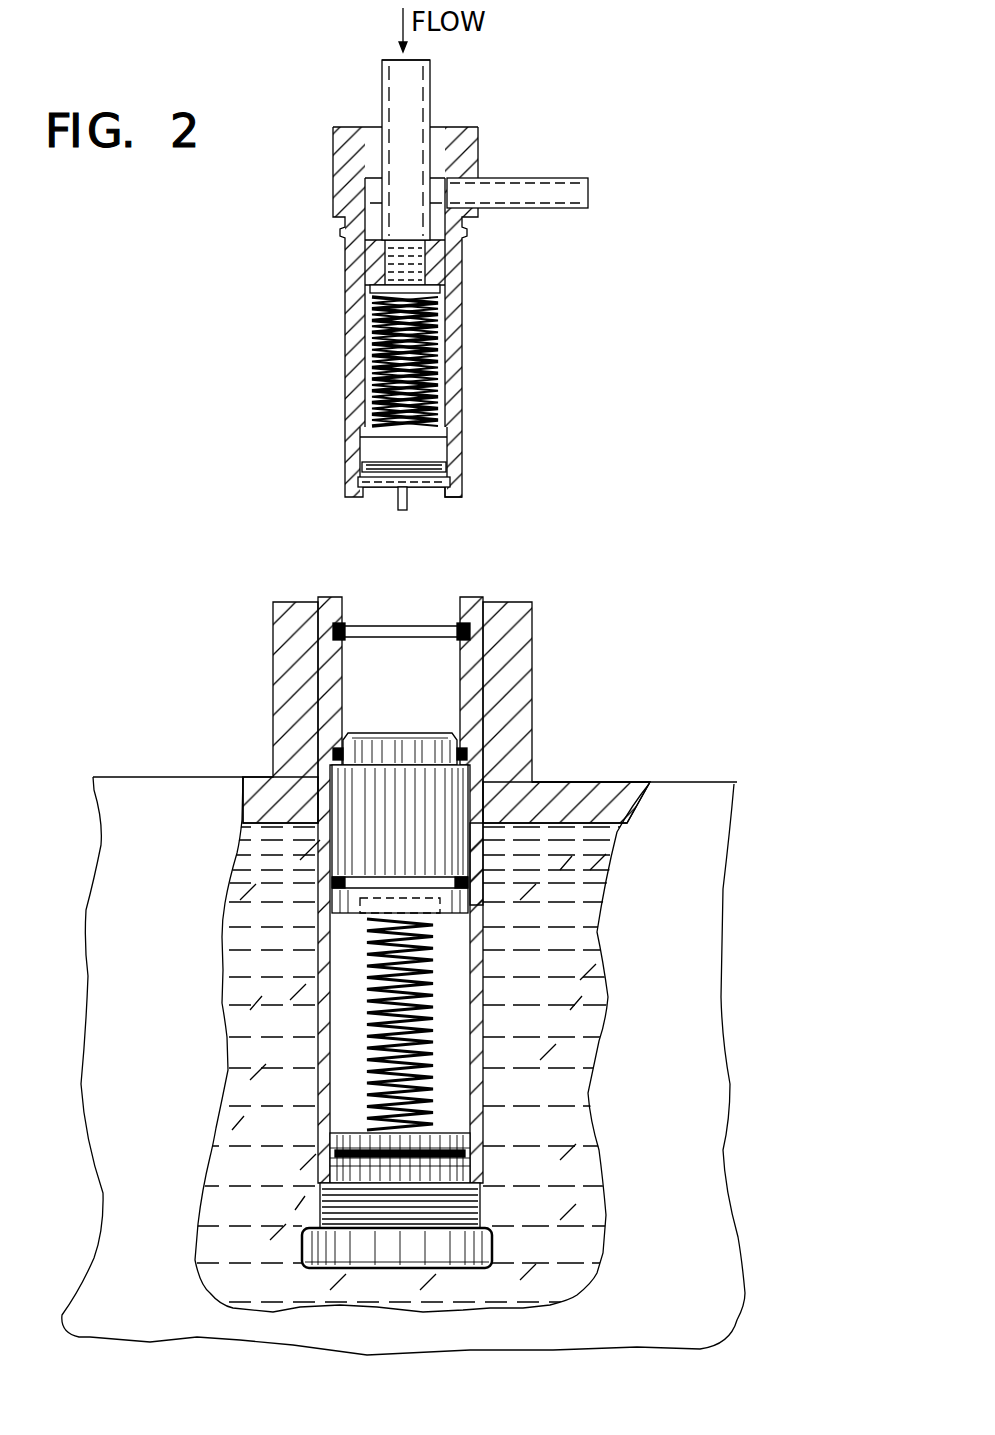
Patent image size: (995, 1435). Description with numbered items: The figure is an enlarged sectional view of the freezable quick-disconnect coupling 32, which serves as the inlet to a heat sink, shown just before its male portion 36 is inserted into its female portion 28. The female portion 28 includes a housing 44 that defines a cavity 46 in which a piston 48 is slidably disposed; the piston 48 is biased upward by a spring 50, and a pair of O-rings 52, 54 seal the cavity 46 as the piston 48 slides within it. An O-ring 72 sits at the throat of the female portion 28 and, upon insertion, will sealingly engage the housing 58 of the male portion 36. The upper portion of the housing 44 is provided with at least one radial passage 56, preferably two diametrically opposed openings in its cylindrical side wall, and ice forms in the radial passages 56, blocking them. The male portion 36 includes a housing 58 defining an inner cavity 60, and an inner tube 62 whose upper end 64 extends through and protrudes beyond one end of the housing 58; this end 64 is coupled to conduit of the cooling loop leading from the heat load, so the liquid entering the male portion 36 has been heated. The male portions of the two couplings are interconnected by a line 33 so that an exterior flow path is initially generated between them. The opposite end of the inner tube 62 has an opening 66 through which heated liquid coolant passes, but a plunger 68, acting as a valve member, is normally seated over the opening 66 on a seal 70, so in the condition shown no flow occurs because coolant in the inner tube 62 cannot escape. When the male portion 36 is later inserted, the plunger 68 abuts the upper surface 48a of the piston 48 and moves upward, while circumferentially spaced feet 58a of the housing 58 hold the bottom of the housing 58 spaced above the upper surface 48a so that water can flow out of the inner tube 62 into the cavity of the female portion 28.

The female portion 28 is at (480, 1178).
The freezable quick-disconnect coupling 32 is at (193, 524).
The line 33 is at (565, 178).
The male portion 36 is at (343, 258).
The housing 44 is at (480, 1101).
The cavity 46 is at (450, 1012).
The piston 48 is at (428, 752).
The upper surface of the piston 48a is at (367, 733).
The spring 50 is at (470, 1112).
The O-ring 52 is at (467, 752).
The O-ring 54 is at (485, 880).
The radial passage 56 is at (316, 790).
The housing 58 is at (345, 398).
The feet 58a is at (450, 498).
The inner cavity 60 is at (365, 348).
The inner tube 62 is at (382, 93).
The upper end of the inner tube 64 is at (430, 107).
The opening 66 is at (385, 478).
The plunger 68 is at (403, 510).
The seal 70 is at (460, 490).
The O-ring 72 is at (470, 632).